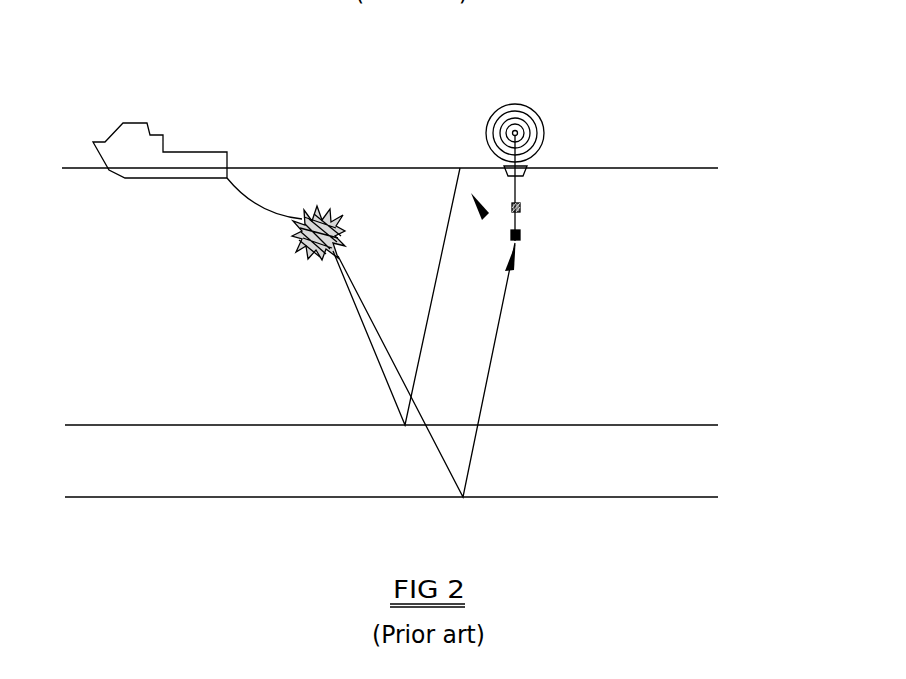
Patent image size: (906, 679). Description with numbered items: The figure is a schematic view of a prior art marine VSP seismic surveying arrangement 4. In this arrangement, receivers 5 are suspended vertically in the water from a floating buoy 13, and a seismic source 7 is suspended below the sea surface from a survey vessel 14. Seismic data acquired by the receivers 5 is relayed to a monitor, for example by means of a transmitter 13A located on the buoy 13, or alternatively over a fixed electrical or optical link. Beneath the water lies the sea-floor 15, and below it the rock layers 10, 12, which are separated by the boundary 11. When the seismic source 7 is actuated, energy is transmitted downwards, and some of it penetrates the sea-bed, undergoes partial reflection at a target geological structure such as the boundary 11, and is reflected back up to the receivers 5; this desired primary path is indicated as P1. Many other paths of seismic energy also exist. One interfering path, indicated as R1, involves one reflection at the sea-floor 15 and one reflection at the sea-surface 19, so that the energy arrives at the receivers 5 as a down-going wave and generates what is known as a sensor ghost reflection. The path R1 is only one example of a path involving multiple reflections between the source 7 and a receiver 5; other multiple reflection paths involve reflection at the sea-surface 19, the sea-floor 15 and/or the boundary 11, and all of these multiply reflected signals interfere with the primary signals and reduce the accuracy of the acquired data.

The marine VSP seismic surveying arrangement 4 is at (645, 39).
The receivers 5 is at (521, 207).
The seismic source 7 is at (276, 248).
The rock layer 10 is at (758, 473).
The boundary 11 is at (213, 498).
The rock layer 12 is at (767, 548).
The buoy 13 is at (503, 163).
The transmitter 13A is at (509, 128).
The survey vessel 14 is at (107, 142).
The sea-floor 15 is at (215, 425).
The sea-surface 19 is at (660, 167).
The interfering path R1 is at (460, 170).
The primary path P1 is at (506, 304).